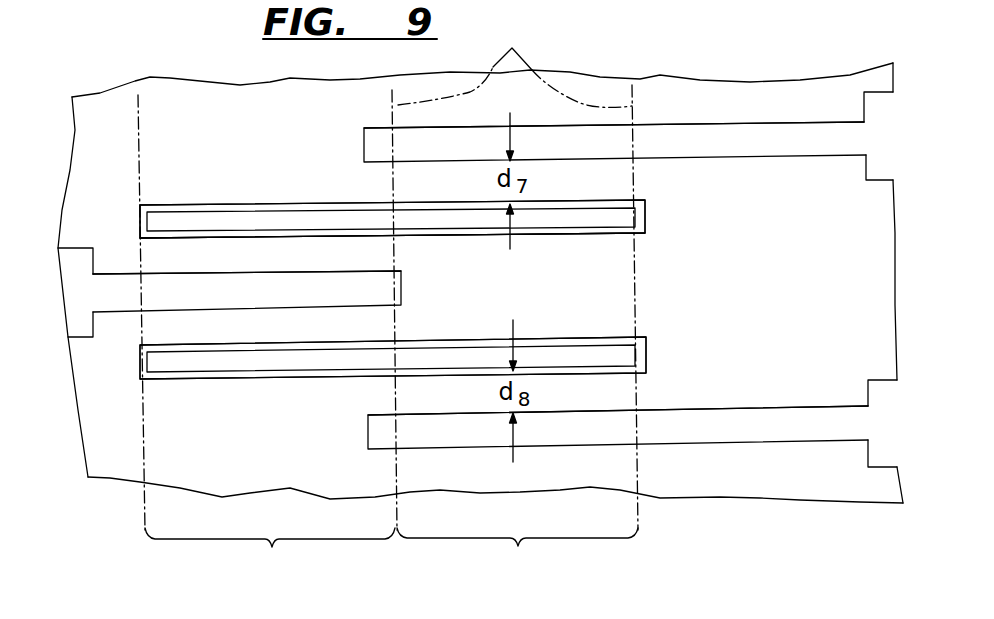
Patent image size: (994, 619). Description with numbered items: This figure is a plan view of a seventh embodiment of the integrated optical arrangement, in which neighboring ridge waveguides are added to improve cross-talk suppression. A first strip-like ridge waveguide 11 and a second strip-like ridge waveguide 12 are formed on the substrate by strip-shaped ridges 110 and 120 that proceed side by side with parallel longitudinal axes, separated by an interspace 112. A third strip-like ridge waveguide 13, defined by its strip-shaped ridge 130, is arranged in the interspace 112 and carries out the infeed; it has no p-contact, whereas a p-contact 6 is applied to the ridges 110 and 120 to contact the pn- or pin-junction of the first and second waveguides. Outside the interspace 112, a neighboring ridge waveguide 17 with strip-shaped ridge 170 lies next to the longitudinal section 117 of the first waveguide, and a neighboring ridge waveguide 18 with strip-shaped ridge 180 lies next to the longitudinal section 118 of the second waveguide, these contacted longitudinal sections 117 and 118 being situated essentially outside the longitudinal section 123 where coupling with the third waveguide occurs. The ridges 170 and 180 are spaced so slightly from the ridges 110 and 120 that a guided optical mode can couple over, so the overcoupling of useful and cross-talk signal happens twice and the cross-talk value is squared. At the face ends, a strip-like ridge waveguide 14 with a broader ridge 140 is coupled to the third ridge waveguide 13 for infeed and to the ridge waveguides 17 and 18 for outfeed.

The strip-like ridge waveguide 14 is at (78, 244).
The strip-shaped ridge 140 is at (80, 339).
The neighboring ridge waveguide 17 is at (735, 119).
The strip-shaped ridge 170 is at (668, 121).
The neighboring ridge waveguide 18 is at (742, 405).
The strip-shaped ridge 180 is at (685, 409).
The strip-shaped ridge 110 is at (198, 205).
The first strip-like ridge waveguide 11 is at (288, 241).
The interspace 112 is at (305, 255).
The p-contact 6 is at (267, 220).
The strip-shaped ridge 120 is at (235, 380).
The second strip-like ridge waveguide 12 is at (324, 383).
The third strip-like ridge waveguide 13 is at (200, 322).
The strip-shaped ridge 130 is at (152, 272).
The longitudinal section 117 is at (515, 65).
The longitudinal section 123 is at (267, 335).
The longitudinal section 118 is at (517, 332).